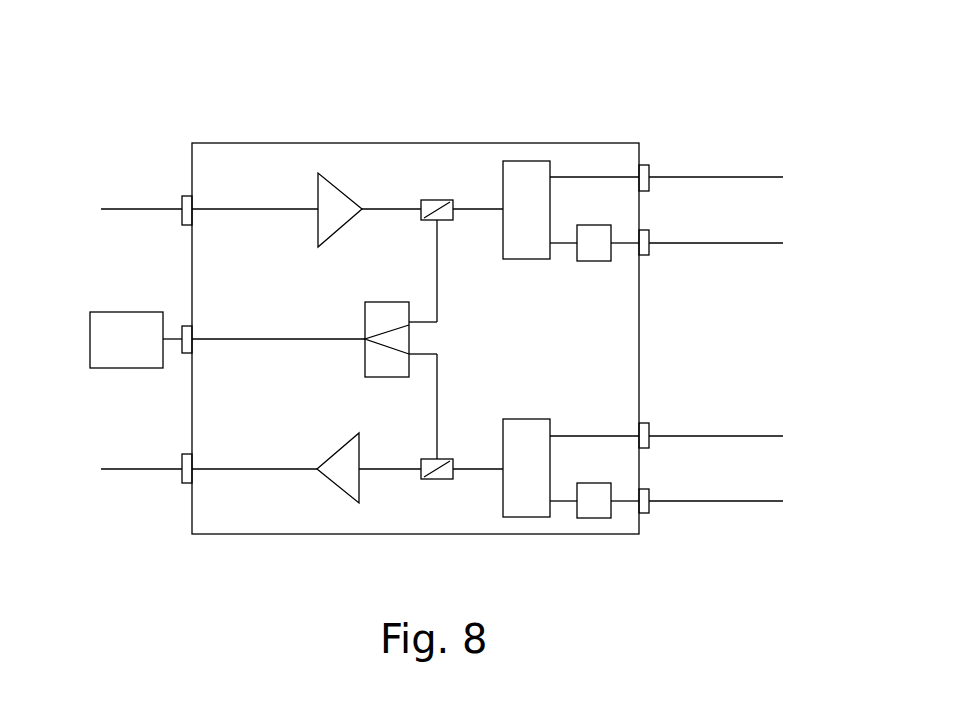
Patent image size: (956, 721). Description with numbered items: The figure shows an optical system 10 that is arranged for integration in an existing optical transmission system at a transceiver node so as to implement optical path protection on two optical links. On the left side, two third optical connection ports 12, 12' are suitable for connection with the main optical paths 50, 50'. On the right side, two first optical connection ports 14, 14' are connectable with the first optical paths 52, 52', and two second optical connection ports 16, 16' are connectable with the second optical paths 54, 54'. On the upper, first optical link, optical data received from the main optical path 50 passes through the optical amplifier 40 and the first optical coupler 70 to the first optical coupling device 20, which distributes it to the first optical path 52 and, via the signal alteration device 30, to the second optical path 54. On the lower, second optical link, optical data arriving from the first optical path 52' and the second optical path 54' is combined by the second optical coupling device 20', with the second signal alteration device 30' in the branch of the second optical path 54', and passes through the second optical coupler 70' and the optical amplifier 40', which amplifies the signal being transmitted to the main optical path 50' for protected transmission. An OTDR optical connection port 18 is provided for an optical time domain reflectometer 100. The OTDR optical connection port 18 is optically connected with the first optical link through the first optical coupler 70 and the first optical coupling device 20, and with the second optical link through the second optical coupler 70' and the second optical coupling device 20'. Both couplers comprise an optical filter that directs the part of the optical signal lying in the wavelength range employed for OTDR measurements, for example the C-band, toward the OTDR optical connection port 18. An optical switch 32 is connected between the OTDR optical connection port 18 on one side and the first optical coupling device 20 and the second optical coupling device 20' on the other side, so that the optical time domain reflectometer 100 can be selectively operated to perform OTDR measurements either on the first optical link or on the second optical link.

The optical system 10 is at (460, 78).
The third optical connection port 12 is at (166, 163).
The optical connection port 12' is at (166, 514).
The first optical connection port 14 is at (658, 138).
The first optical connection port 14' is at (675, 399).
The second optical connection port 16 is at (656, 281).
The second optical connection port 16' is at (681, 538).
The OTDR optical connection port 18 is at (186, 326).
The first optical coupling device 20 is at (518, 162).
The second optical coupling device 20' is at (537, 516).
The signal alteration device 30 is at (579, 179).
The second signal alteration device 30' is at (608, 548).
The optical switch 32 is at (365, 320).
The optical amplifier 40 is at (355, 174).
The optical amplifier 40' is at (304, 507).
The main optical path 50 is at (135, 164).
The main optical path 50' is at (135, 514).
The first optical path 52 is at (716, 135).
The first optical path 52' is at (729, 393).
The second optical path 54 is at (718, 288).
The second optical path 54' is at (721, 557).
The first optical coupler 70 is at (449, 161).
The second optical coupler 70' is at (452, 525).
The optical time domain reflectometer 100 is at (124, 312).